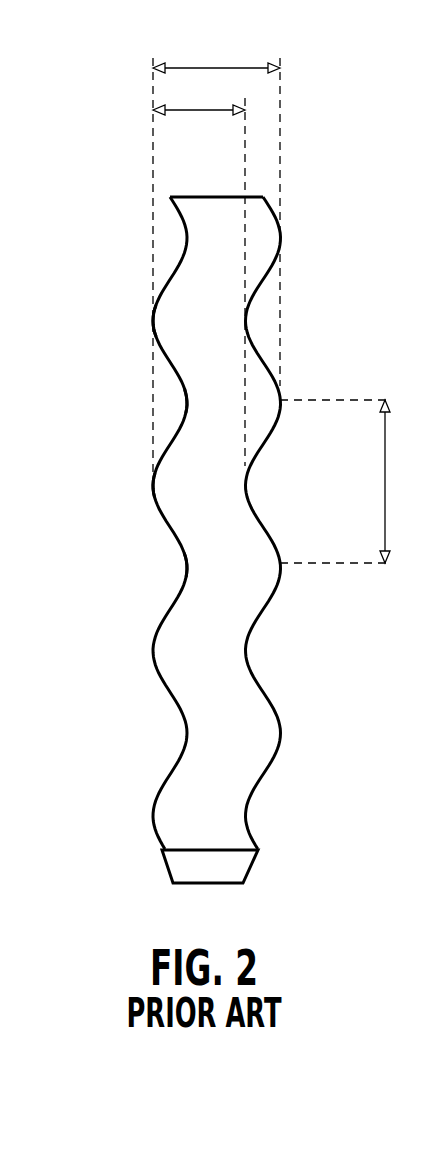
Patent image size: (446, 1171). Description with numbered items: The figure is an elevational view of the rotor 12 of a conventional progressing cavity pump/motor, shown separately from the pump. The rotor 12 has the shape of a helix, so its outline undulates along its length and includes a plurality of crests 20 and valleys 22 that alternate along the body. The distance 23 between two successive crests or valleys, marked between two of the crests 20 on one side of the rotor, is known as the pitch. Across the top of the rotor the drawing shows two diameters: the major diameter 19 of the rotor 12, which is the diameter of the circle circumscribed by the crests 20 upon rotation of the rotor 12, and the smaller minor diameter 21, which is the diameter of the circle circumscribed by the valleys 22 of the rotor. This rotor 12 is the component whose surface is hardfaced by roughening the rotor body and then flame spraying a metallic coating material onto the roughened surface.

The rotor 12 is at (185, 235).
The major diameter 19 is at (196, 67).
The minor diameter 21 is at (198, 113).
The crests 20 is at (152, 322).
The valleys 22 is at (185, 400).
The distance between successive crests or valleys 23 is at (385, 490).